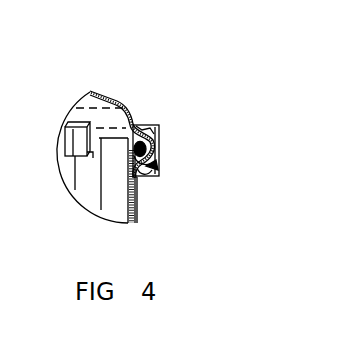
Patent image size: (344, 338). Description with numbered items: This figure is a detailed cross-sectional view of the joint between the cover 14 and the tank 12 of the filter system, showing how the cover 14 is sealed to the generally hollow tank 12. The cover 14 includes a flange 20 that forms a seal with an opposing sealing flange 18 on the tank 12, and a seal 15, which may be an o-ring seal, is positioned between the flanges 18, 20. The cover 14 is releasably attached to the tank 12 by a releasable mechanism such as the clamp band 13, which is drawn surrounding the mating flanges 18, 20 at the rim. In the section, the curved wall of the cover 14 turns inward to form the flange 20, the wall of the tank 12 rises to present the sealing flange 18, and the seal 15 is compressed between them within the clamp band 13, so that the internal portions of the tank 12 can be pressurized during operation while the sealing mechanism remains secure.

The tank 12 is at (147, 225).
The clamp band 13 is at (170, 130).
The cover 14 is at (105, 91).
The seal 15 is at (155, 148).
The sealing flange 18 is at (162, 170).
The flange 20 is at (153, 127).